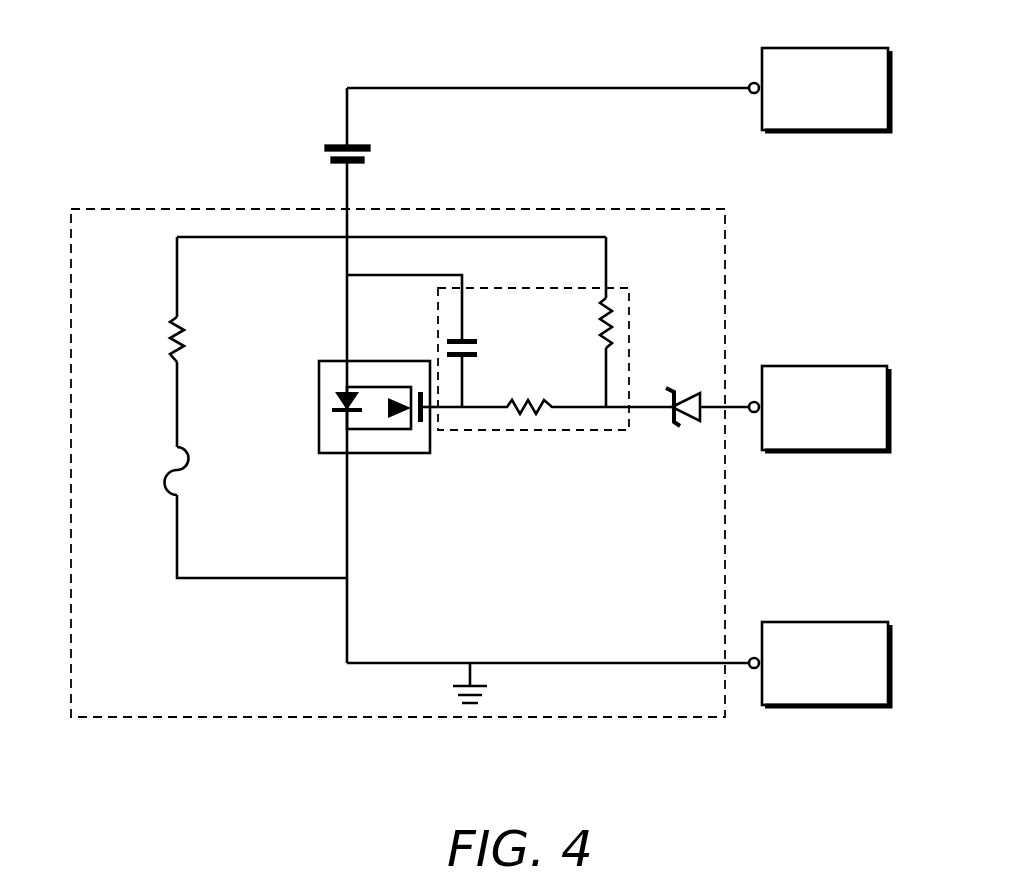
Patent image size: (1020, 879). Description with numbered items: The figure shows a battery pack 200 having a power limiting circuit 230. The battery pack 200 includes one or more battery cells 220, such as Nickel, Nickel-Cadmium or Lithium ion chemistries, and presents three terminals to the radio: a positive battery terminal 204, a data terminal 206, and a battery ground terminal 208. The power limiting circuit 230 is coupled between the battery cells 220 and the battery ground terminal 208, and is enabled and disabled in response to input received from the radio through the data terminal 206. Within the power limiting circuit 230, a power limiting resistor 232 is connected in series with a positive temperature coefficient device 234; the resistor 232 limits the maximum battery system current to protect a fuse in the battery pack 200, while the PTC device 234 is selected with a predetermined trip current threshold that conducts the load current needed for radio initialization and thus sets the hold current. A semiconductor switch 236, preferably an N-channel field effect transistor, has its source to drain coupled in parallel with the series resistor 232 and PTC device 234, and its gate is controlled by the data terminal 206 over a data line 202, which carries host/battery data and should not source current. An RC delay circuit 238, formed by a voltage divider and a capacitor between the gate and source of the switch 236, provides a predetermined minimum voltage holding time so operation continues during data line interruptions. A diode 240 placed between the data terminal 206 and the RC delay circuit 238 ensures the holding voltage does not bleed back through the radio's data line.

The battery pack 200 is at (78, 26).
The data line 202 is at (645, 405).
The positive battery terminal 204 is at (776, 48).
The data terminal 206 is at (793, 366).
The battery ground terminal 208 is at (793, 622).
The battery cells 220 is at (372, 148).
The power limiting circuit 230 is at (90, 208).
The power limiting resistor 232 is at (186, 330).
The positive temperature coefficient (PTC) device 234 is at (189, 459).
The semiconductor switch 236 is at (400, 455).
The RC delay circuit 238 is at (535, 431).
The diode 240 is at (676, 428).